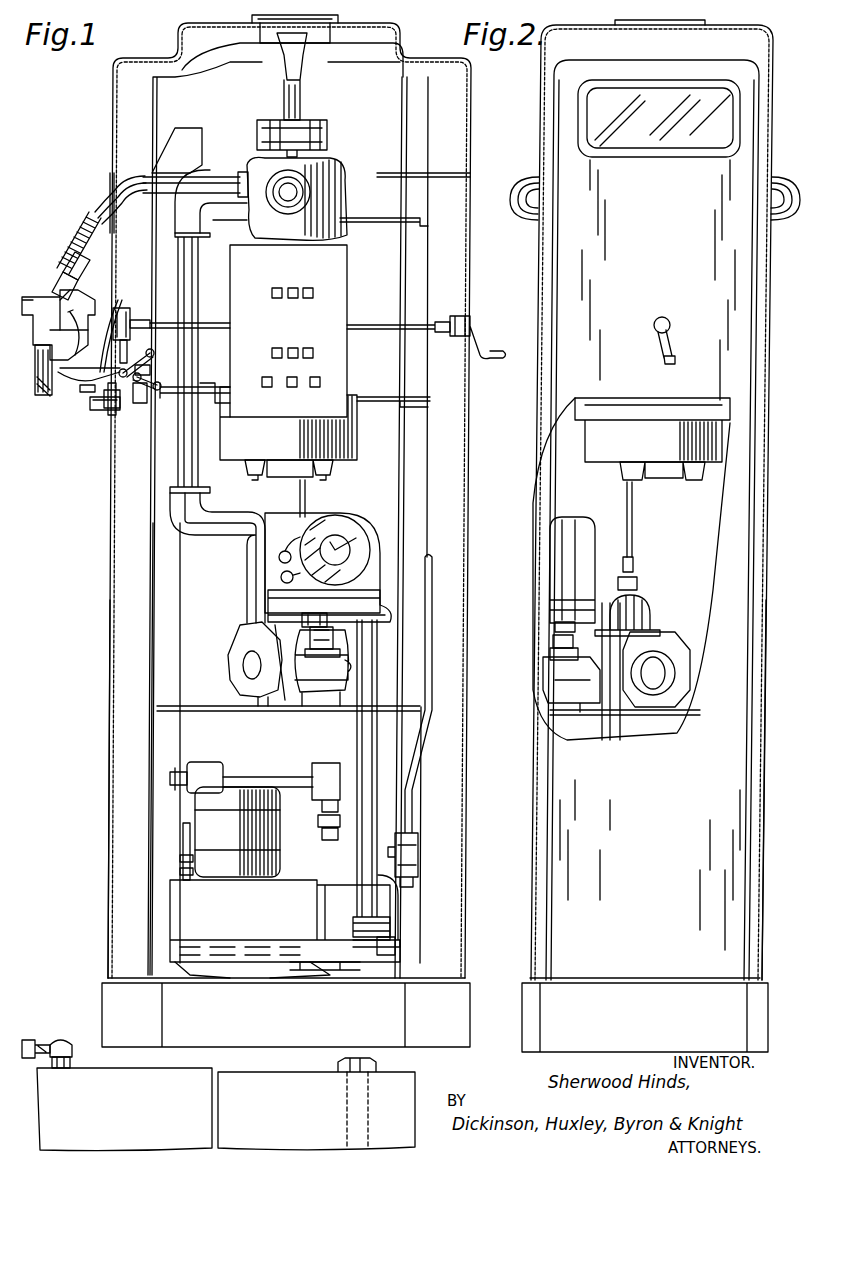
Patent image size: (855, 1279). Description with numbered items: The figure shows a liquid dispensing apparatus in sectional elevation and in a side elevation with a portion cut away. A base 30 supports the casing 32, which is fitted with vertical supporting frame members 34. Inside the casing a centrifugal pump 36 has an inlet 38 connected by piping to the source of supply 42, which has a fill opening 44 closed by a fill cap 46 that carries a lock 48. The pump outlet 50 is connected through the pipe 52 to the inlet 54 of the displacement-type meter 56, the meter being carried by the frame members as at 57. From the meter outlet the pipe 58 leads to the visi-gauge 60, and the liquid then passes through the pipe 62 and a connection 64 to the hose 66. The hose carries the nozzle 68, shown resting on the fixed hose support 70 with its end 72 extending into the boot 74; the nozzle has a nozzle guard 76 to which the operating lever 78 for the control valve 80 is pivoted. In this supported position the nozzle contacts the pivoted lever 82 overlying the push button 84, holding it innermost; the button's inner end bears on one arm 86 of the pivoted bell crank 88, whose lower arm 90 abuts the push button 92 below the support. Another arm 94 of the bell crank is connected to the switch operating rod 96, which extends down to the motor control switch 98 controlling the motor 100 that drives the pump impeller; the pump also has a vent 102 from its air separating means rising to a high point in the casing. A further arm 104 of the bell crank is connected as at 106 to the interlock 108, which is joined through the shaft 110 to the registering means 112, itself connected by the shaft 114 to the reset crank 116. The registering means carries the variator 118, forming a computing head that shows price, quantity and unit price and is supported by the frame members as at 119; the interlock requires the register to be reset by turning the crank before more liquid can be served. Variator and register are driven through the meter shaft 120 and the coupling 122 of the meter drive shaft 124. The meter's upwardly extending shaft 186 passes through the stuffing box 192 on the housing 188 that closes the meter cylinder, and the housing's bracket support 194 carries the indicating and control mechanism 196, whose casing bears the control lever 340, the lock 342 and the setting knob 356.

In FIG. 1, the base 30 is at (103, 985).
In FIG. 2, the base 30 is at (760, 1000).
In FIG. 1, the casing 32 is at (108, 803).
In FIG. 2, the casing 32 is at (766, 917).
In FIG. 1, the vertical supporting frame members 34 is at (151, 762).
In FIG. 1, the pump 36 is at (185, 898).
In FIG. 1, the inlet 38 is at (400, 952).
In FIG. 1, the source of supply 42 is at (415, 1090).
In FIG. 1, the fill opening 44 is at (72, 1062).
In FIG. 1, the fill cap 46 is at (66, 1037).
In FIG. 1, the lock 48 is at (42, 1040).
In FIG. 1, the outlet 50 is at (350, 965).
In FIG. 1, the pipe 52 is at (356, 740).
In FIG. 2, the pipe 52 is at (618, 740).
In FIG. 1, the inlet 54 is at (383, 608).
In FIG. 2, the inlet 54 is at (642, 606).
In FIG. 1, the meter 56 is at (240, 665).
In FIG. 2, the meter 56 is at (662, 650).
In FIG. 1, the meter support 57 is at (220, 711).
In FIG. 1, the pipe 58 is at (212, 533).
In FIG. 1, the visi-gauge 60 is at (305, 172).
In FIG. 2, the visi-gauge 60 is at (522, 182).
In FIG. 1, the pipe 62 is at (208, 180).
In FIG. 1, the connection 64 is at (122, 190).
In FIG. 1, the hose 66 is at (40, 400).
In FIG. 1, the nozzle 68 is at (40, 300).
In FIG. 1, the fixed hose support 70 is at (88, 378).
In FIG. 1, the end 72 is at (82, 215).
In FIG. 1, the boot 74 is at (153, 152).
In FIG. 1, the nozzle guard 76 is at (82, 240).
In FIG. 1, the operating lever 78 is at (67, 332).
In FIG. 1, the control valve 80 is at (62, 272).
In FIG. 1, the pivoted lever 82 is at (116, 298).
In FIG. 1, the push button 84 is at (150, 352).
In FIG. 1, the arm 86 is at (145, 370).
In FIG. 1, the bell crank 88 is at (142, 405).
In FIG. 1, the lower arm 90 is at (118, 418).
In FIG. 1, the push button 92 is at (98, 410).
In FIG. 1, the arm 94 is at (160, 388).
In FIG. 1, the switch operating rod 96 is at (165, 420).
In FIG. 1, the motor control switch 98 is at (207, 763).
In FIG. 1, the motor 100 is at (243, 795).
In FIG. 1, the vent 102 is at (183, 845).
In FIG. 1, the arm 104 is at (88, 393).
In FIG. 1, the connection 106 is at (135, 340).
In FIG. 1, the interlock 108 is at (124, 306).
In FIG. 1, the shaft 110 is at (140, 328).
In FIG. 1, the registering means 112 is at (338, 280).
In FIG. 1, the shaft 114 is at (366, 323).
In FIG. 1, the reset crank 116 is at (479, 318).
In FIG. 2, the reset crank 116 is at (672, 340).
In FIG. 1, the variator 118 is at (348, 434).
In FIG. 2, the variator 118 is at (652, 439).
In FIG. 1, the computing head support 119 is at (368, 394).
In FIG. 1, the meter shaft 120 is at (308, 494).
In FIG. 2, the meter shaft 120 is at (634, 502).
In FIG. 2, the coupling 122 is at (634, 565).
In FIG. 2, the meter drive shaft 124 is at (638, 580).
In FIG. 1, the shaft 186 is at (340, 640).
In FIG. 2, the shaft 186 is at (553, 641).
In FIG. 1, the housing 188 is at (335, 672).
In FIG. 2, the housing 188 is at (583, 705).
In FIG. 1, the stuffing box 192 is at (330, 655).
In FIG. 2, the stuffing box 192 is at (552, 657).
In FIG. 1, the bracket support 194 is at (300, 620).
In FIG. 2, the bracket support 194 is at (555, 628).
In FIG. 2, the indicating and control mechanism 196 is at (568, 525).
In FIG. 1, the control lever 340 is at (300, 593).
In FIG. 1, the lock 342 is at (280, 578).
In FIG. 1, the setting knob 356 is at (280, 550).